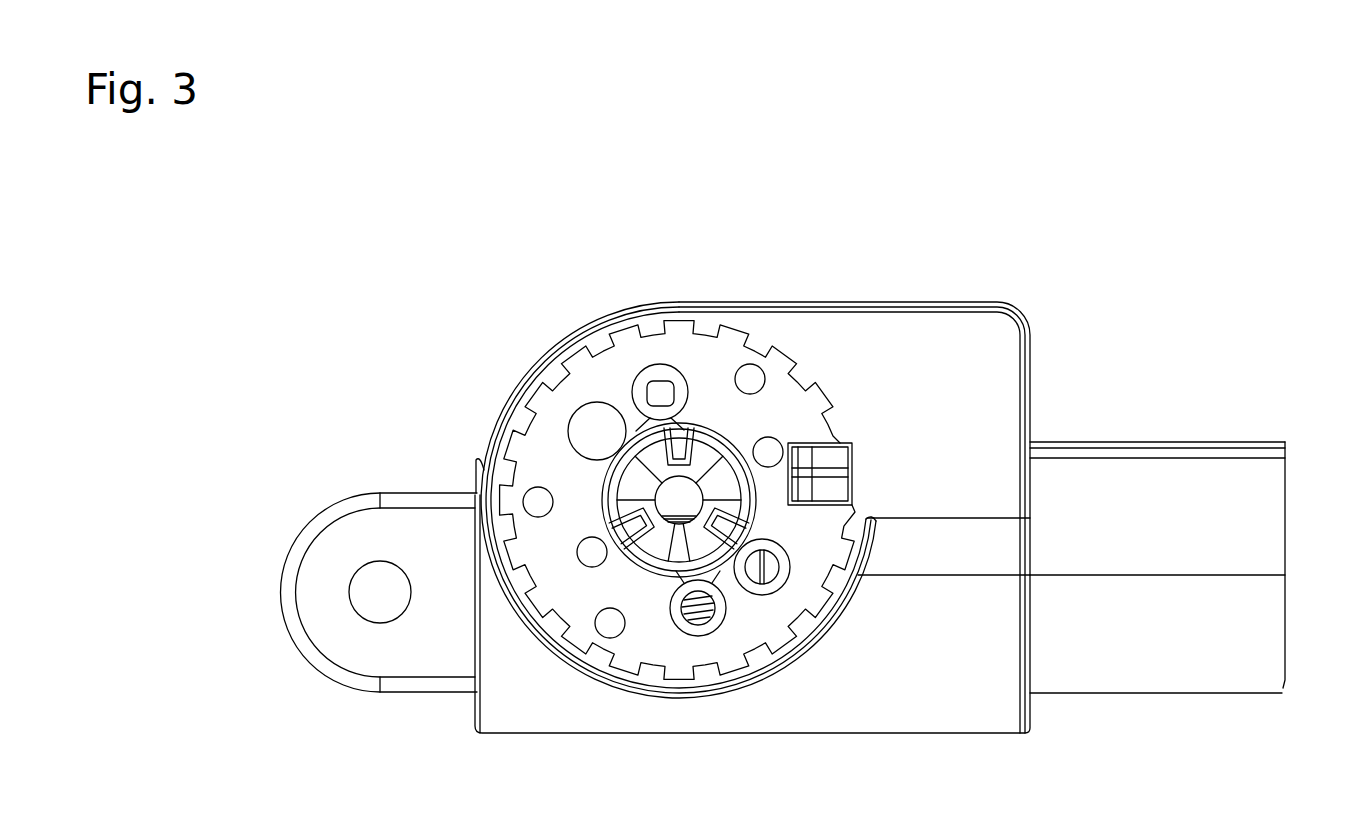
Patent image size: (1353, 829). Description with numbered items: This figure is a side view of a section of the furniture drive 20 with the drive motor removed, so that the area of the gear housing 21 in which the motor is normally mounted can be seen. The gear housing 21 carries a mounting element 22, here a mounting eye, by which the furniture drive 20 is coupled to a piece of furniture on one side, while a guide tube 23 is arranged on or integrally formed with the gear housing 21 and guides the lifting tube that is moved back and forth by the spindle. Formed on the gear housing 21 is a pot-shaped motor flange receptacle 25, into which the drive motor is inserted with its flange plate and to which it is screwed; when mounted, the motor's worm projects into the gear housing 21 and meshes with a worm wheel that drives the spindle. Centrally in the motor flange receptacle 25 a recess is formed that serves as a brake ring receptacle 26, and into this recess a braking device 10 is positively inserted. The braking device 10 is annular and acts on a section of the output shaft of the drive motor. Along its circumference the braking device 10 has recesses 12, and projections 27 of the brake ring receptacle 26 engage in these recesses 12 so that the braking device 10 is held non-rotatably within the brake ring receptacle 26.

The braking device 10 is at (710, 540).
The recesses 12 is at (653, 455).
The furniture drive 20 is at (1117, 252).
The gear housing 21 is at (942, 350).
The mounting element 22 is at (350, 543).
The guide tube 23 is at (1177, 502).
The motor flange receptacle 25 is at (693, 353).
The brake ring receptacle 26 is at (657, 575).
The projections 27 is at (688, 440).